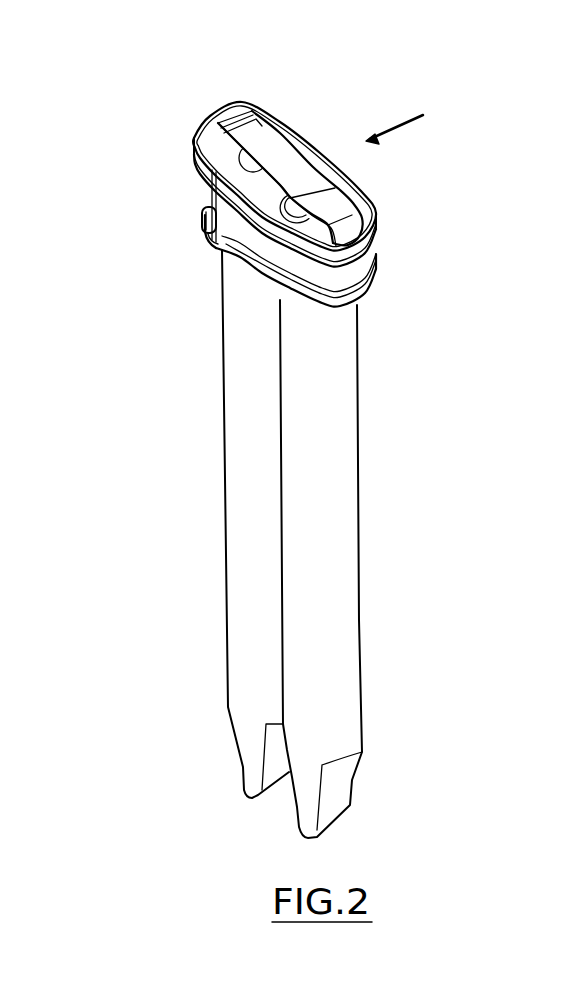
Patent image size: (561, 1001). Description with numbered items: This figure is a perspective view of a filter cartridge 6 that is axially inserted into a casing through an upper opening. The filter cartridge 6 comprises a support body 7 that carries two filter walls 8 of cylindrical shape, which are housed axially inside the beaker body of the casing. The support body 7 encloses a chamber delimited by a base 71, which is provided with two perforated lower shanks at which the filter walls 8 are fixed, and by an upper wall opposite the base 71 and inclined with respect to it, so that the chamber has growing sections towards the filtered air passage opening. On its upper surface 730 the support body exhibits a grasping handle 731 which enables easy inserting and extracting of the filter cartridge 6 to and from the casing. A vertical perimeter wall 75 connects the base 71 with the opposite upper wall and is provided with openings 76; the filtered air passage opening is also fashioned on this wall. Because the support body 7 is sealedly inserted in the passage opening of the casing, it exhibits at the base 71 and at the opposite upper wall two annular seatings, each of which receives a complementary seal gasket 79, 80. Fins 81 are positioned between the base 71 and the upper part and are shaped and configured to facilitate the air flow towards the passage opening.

The filter cartridge 6 is at (395, 187).
The support body 7 is at (380, 220).
The filter wall 8 is at (233, 456).
The base 71 is at (244, 274).
The vertical perimeter wall 75 is at (352, 272).
The openings 76 is at (205, 229).
The seal gasket 79 is at (221, 256).
The seal gasket 80 is at (196, 150).
The fins 81 is at (203, 214).
The upper surface 730 is at (310, 142).
The grasping handle 731 is at (281, 130).